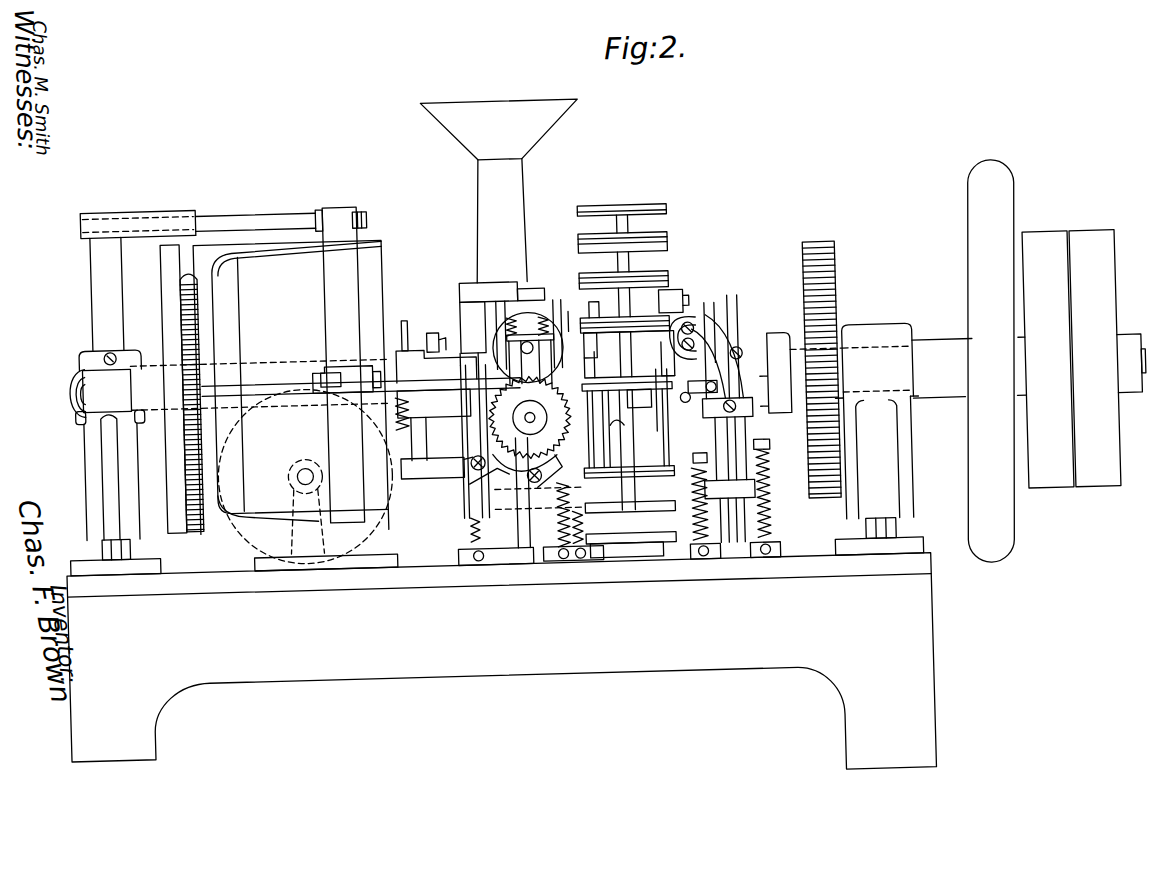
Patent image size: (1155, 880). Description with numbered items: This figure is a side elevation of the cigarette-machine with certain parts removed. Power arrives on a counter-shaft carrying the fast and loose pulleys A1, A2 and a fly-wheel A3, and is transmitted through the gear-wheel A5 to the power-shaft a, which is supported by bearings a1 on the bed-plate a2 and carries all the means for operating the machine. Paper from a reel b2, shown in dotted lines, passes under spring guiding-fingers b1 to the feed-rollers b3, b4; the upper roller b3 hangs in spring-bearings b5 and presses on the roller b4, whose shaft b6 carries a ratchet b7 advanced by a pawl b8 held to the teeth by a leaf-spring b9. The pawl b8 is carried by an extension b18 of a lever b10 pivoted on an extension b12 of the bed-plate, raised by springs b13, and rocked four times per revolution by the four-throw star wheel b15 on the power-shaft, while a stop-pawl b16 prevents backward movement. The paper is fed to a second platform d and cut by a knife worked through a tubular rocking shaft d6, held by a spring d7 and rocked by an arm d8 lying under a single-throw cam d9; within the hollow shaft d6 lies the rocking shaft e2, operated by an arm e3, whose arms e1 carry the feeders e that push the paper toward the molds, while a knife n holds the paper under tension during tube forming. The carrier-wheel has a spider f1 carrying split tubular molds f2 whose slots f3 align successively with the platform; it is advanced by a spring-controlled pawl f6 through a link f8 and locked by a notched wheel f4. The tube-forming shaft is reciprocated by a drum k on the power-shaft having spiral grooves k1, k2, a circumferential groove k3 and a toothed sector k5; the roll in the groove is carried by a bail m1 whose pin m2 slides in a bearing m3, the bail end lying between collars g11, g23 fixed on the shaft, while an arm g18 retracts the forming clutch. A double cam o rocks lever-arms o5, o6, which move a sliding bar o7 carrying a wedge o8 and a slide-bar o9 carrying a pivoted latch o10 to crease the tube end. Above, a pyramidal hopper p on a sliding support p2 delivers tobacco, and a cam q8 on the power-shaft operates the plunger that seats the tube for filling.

The power-shaft a is at (77, 393).
The bearings a1 is at (96, 438).
The bed-plate a2 is at (626, 592).
The fast pulley A1 is at (1046, 258).
The loose pulley A2 is at (1099, 259).
The fly-wheel A3 is at (1010, 570).
The gear-wheel A5 is at (827, 263).
The cam q8 is at (780, 365).
The bail m1 is at (366, 287).
The pin m2 is at (298, 224).
The bearing m3 is at (135, 216).
The drum k is at (382, 263).
The spiral groove portion k1 is at (244, 264).
The spiral groove portion k2 is at (229, 518).
The circumferential groove k3 is at (238, 325).
The toothed sector k5 is at (205, 299).
The spring guiding-fingers b1 is at (450, 399).
The roll or reel b2 is at (242, 430).
The roller b3 is at (556, 330).
The feed-roller b4 is at (558, 468).
The spring-bearings b5 is at (540, 333).
The shaft b6 is at (537, 430).
The ratchet b7 is at (562, 456).
The pawl b8 is at (430, 462).
The leaf-spring b9 is at (470, 487).
The lever b10 is at (380, 466).
The extension b12 is at (464, 328).
The springs b13 is at (380, 444).
The star wheel b15 is at (411, 332).
The stop-pawl b16 is at (526, 514).
The extension b18 is at (380, 488).
The collar g11 is at (357, 376).
The arm g18 is at (437, 338).
The collar g23 is at (323, 375).
The hopper p is at (485, 119).
The sliding support p2 is at (455, 298).
The platform d is at (620, 393).
The tubular rocking shaft d6 is at (471, 529).
The spring d7 is at (578, 570).
The rocking arm d8 is at (472, 503).
The single-throw cam d9 is at (488, 335).
The feeders e is at (641, 450).
The arm e1 is at (622, 447).
The rocking shaft e2 is at (509, 529).
The arm e3 is at (484, 485).
The spider f1 is at (636, 244).
The tubular molds f2 is at (602, 220).
The slot f3 is at (678, 258).
The notched wheel f4 is at (575, 325).
The spring-controlled pawl f6 is at (670, 331).
The link f8 is at (680, 308).
The knife n is at (640, 430).
The double cam o is at (714, 352).
The lever-arm o5 is at (711, 477).
The lever-arm o6 is at (761, 460).
The vertically-sliding bar o7 is at (748, 527).
The wedge o8 is at (709, 430).
The vertical slide-bar o9 is at (756, 345).
The pivoted latch o10 is at (695, 338).